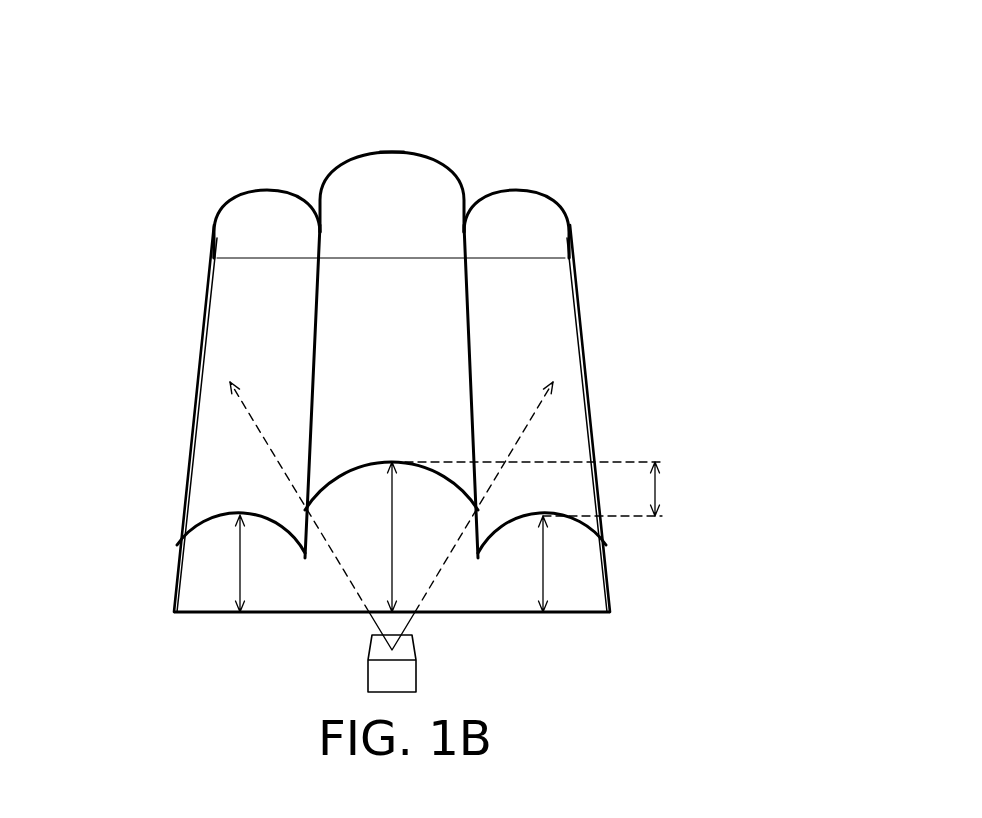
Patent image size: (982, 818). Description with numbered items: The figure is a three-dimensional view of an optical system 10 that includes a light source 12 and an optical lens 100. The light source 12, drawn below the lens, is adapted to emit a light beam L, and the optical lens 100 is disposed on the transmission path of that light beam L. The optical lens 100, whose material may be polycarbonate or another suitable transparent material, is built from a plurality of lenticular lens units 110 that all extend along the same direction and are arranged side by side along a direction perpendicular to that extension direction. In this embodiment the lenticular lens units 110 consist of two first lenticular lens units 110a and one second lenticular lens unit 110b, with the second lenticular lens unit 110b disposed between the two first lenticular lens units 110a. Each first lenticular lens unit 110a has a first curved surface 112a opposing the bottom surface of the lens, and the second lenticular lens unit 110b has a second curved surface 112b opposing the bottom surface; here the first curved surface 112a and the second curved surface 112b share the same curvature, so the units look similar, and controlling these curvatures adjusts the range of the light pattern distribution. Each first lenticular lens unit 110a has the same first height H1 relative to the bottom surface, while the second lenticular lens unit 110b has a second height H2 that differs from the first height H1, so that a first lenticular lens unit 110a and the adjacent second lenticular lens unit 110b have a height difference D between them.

The optical system 10 is at (397, 381).
The optical lens 100 is at (217, 72).
The lenticular lens units 110 is at (383, 320).
The first lenticular lens units 110a is at (268, 207).
The second lenticular lens unit 110b is at (393, 180).
The first curved surface 112a is at (230, 297).
The second curved surface 112b is at (430, 188).
The light source 12 is at (407, 678).
The light beam L is at (407, 625).
The first height H1 is at (408, 563).
The second height H2 is at (413, 537).
The height difference D is at (535, 489).